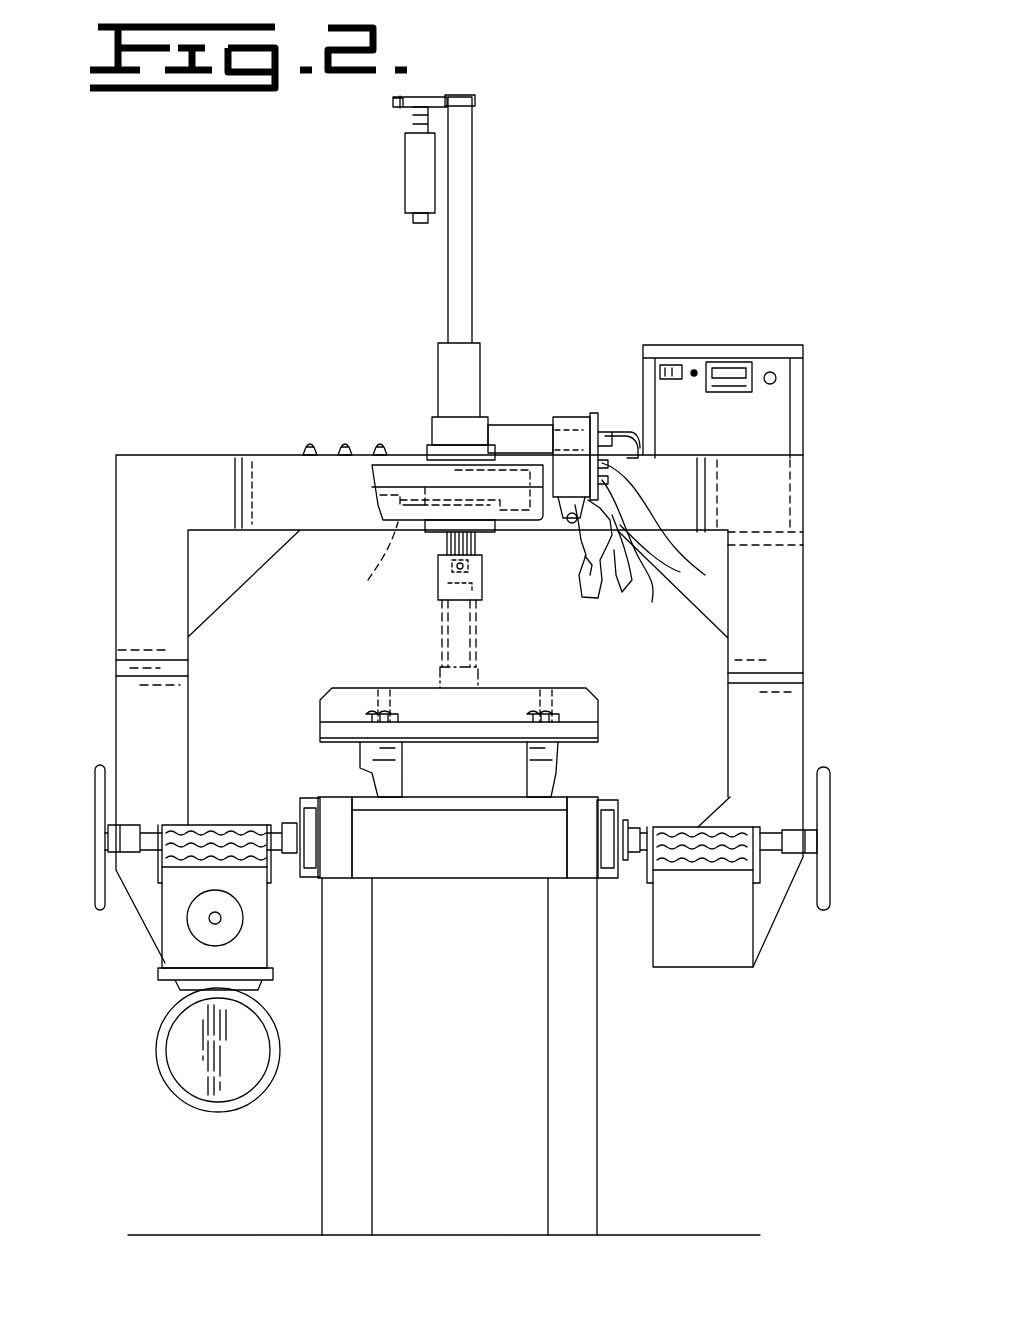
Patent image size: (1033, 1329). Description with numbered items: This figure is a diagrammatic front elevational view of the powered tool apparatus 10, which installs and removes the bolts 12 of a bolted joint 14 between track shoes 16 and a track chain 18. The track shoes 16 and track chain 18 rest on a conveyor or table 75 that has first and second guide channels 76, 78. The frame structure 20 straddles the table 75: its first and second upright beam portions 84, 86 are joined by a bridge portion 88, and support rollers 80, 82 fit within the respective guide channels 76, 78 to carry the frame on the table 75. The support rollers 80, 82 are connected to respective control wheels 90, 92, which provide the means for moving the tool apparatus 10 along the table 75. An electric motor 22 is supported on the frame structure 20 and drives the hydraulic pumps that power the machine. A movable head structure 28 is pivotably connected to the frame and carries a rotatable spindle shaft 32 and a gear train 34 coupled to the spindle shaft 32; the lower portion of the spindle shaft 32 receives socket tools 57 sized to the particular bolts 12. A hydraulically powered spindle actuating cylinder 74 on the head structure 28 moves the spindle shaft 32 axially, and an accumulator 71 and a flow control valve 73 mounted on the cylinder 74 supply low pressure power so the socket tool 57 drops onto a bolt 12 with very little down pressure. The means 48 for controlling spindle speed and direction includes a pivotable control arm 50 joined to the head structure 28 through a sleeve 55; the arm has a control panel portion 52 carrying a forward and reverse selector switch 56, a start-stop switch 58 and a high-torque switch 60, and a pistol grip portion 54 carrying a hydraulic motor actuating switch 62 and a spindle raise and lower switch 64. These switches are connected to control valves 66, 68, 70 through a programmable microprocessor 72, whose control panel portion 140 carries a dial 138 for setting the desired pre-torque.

The powered tool apparatus 10 is at (258, 314).
The bolts 12 is at (376, 700).
The bolted joint 14 is at (352, 715).
The track shoes 16 is at (598, 698).
The track chain 18 is at (556, 752).
The frame structure 20 is at (808, 645).
The electric motor 22 is at (218, 1112).
The movable head structure 28 is at (388, 530).
The rotatable spindle shaft 32 is at (478, 548).
The gear train 34 is at (367, 561).
The means for controlling rotational speed and direction 48 is at (632, 463).
The control arm 50 is at (520, 425).
The control panel portion 52 is at (583, 415).
The pistol grip portion 54 is at (594, 598).
The sleeve 55 is at (487, 425).
The forward and reverse selector switch 56 is at (605, 432).
The socket tool 57 is at (438, 598).
The start-stop switch 58 is at (622, 505).
The high-torque switch 60 is at (655, 555).
The hydraulic motor actuating switch 62 is at (580, 566).
The spindle raise and lower switch 64 is at (626, 570).
The control valve 66 is at (303, 452).
The control valve 68 is at (340, 452).
The control valve 70 is at (377, 452).
The accumulator 71 is at (405, 172).
The programmable microprocessor 72 is at (759, 425).
The flow control valve 73 is at (470, 100).
The spindle actuating cylinder 74 is at (468, 278).
The table 75 is at (485, 800).
The first guide channel 76 is at (612, 800).
The second guide channel 78 is at (306, 798).
The support roller 80 is at (642, 858).
The support roller 82 is at (303, 868).
The first upright beam portion 84 is at (787, 627).
The second upright beam portion 86 is at (167, 620).
The bridge portion 88 is at (322, 505).
The control wheel 90 is at (826, 910).
The control wheel 92 is at (98, 905).
The dial 138 is at (777, 383).
The control panel portion 140 is at (808, 345).